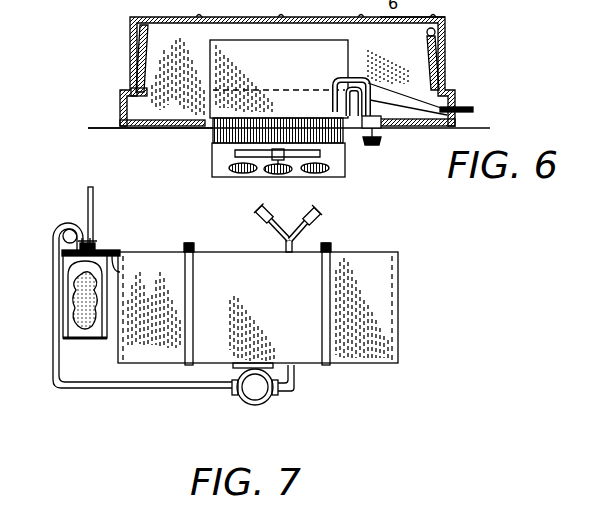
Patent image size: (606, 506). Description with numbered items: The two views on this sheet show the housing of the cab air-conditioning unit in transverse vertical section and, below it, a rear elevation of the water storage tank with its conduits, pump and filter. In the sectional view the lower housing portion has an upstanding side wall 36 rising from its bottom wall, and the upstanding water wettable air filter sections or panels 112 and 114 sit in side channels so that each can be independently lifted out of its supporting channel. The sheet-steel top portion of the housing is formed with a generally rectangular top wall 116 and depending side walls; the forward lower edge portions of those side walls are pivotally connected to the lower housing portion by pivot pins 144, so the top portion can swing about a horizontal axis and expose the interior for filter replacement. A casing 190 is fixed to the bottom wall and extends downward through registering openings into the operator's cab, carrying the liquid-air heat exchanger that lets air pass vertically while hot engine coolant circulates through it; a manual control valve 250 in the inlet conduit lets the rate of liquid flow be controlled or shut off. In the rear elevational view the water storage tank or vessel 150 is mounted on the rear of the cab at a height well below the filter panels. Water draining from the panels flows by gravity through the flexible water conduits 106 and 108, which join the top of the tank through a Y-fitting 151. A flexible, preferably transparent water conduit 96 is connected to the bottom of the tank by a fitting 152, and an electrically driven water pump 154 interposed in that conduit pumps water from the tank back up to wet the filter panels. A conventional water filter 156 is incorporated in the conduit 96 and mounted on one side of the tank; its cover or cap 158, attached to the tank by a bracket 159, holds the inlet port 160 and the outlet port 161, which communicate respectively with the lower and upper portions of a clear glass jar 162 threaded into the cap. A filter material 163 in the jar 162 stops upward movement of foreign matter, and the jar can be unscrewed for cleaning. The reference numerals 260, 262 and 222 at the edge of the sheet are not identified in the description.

In FIG. 6, the air filter panel 112 is at (128, 63).
In FIG. 6, the pivot pin 144 is at (131, 27).
In FIG. 6, the side wall 36 is at (125, 108).
In FIG. 6, the air filter panel 114 is at (443, 65).
In FIG. 6, the top wall 116 is at (425, 18).
In FIG. 6, the casing 190 is at (350, 57).
In FIG. 6, the manual control valve 250 is at (378, 146).
In FIG. 7, the water storage tank 150 is at (155, 265).
In FIG. 7, the bracket 159 is at (124, 268).
In FIG. 7, the Y-fitting 151 is at (297, 243).
In FIG. 7, the water conduit 106 is at (259, 218).
In FIG. 7, the water conduit 108 is at (314, 226).
In FIG. 7, the outlet port 161 is at (53, 240).
In FIG. 7, the cover 158 is at (73, 222).
In FIG. 7, the water conduit 96 is at (73, 225).
In FIG. 7, the inlet port 160 is at (93, 215).
In FIG. 7, the water filter 156 is at (110, 250).
In FIG. 7, the clear glass jar 162 is at (84, 343).
In FIG. 7, the filter material 163 is at (93, 342).
In FIG. 7, the water pump 154 is at (250, 395).
In FIG. 7, the fitting 152 is at (298, 375).
In FIG. 7, the component 260 is at (580, 245).
In FIG. 7, the component 262 is at (588, 300).
In FIG. 7, the component 222 is at (575, 327).